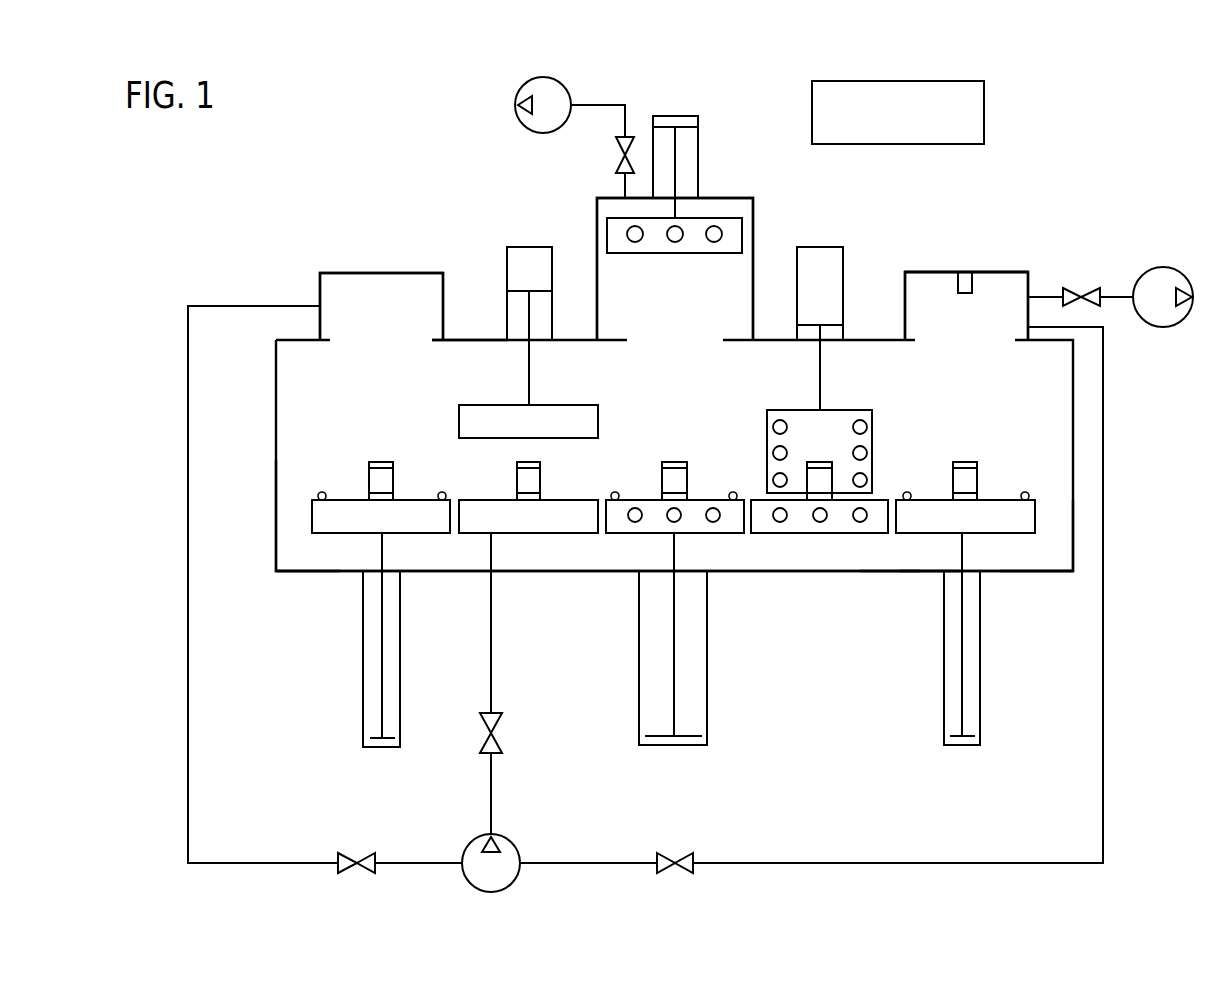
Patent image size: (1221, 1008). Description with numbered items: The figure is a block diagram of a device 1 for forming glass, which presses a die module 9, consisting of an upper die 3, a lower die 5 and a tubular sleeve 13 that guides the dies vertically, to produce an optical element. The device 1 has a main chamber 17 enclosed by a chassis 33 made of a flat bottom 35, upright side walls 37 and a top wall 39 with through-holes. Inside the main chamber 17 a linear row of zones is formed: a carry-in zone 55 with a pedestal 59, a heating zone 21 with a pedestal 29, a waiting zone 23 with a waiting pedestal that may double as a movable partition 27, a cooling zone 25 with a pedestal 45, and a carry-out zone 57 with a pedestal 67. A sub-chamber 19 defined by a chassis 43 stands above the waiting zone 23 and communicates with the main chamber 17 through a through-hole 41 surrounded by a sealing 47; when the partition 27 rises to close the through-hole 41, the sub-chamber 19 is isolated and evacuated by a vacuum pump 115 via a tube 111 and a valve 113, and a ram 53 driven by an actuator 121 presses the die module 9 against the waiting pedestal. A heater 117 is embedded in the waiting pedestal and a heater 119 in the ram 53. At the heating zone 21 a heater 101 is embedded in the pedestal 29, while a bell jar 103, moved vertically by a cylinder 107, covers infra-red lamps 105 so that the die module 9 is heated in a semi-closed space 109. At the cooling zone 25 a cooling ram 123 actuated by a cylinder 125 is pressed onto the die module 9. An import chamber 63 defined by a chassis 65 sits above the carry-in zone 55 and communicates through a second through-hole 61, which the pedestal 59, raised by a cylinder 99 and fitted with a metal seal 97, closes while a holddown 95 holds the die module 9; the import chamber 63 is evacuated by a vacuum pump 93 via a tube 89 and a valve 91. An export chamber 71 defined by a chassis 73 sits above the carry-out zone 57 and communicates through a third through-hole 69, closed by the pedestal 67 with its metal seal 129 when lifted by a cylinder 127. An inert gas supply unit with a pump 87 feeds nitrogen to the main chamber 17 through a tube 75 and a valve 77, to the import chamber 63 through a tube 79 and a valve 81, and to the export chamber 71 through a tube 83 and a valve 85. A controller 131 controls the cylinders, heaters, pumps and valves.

The device 1 is at (1081, 184).
The upper die 3 is at (963, 460).
The lower die 5 is at (984, 497).
The die module 9 is at (402, 479).
The sleeve 13 is at (947, 477).
The main chamber 17 is at (835, 555).
The sub-chamber 19 is at (742, 268).
The heating zone 21 is at (821, 550).
The waiting zone 23 is at (631, 550).
The cooling zone 25 is at (548, 550).
The movable partition 27 is at (722, 535).
The pedestal 29 is at (862, 534).
The chassis 33 is at (888, 573).
The bottom 35 is at (930, 573).
The side walls 37 is at (276, 468).
The top wall 39 is at (470, 337).
The through-hole 41 is at (692, 343).
The chassis 43 is at (728, 198).
The pedestal 45 is at (470, 535).
The sealing 47 is at (615, 492).
The ram 53 is at (690, 254).
The carry-in zone 55 is at (999, 550).
The carry-out zone 57 is at (347, 550).
The pedestal 59 is at (1050, 568).
The second through-hole 61 is at (976, 340).
The import chamber 63 is at (1005, 293).
The chassis 65 is at (935, 272).
The pedestal 67 is at (325, 537).
The third through-hole 69 is at (380, 325).
The export chamber 71 is at (380, 303).
The chassis 73 is at (338, 273).
The tube 75 is at (492, 670).
The valve 77 is at (500, 740).
The tube 79 is at (1103, 712).
The valve 81 is at (674, 855).
The tube 83 is at (188, 600).
The valve 85 is at (357, 855).
The pump 87 is at (521, 845).
The tube 89 is at (1048, 296).
The valve 91 is at (1087, 288).
The vacuum pump 93 is at (1141, 272).
The holddown 95 is at (960, 282).
The metal seal 97 is at (1029, 492).
The cylinder 99 is at (980, 688).
The heater 101 is at (780, 527).
The bell jar 103 is at (847, 410).
The infra-red lamps 105 is at (868, 427).
The cylinder 107 is at (832, 283).
The semi-closed space 109 is at (803, 423).
The tube 111 is at (600, 103).
The valve 113 is at (616, 159).
The vacuum pump 115 is at (513, 118).
The heater 117 is at (656, 512).
The heater 119 is at (636, 243).
The actuator 121 is at (680, 116).
The cooling ram 123 is at (561, 404).
The cylinder 125 is at (526, 247).
The cylinder 127 is at (363, 694).
The metal seal 129 is at (322, 492).
The controller 131 is at (984, 108).